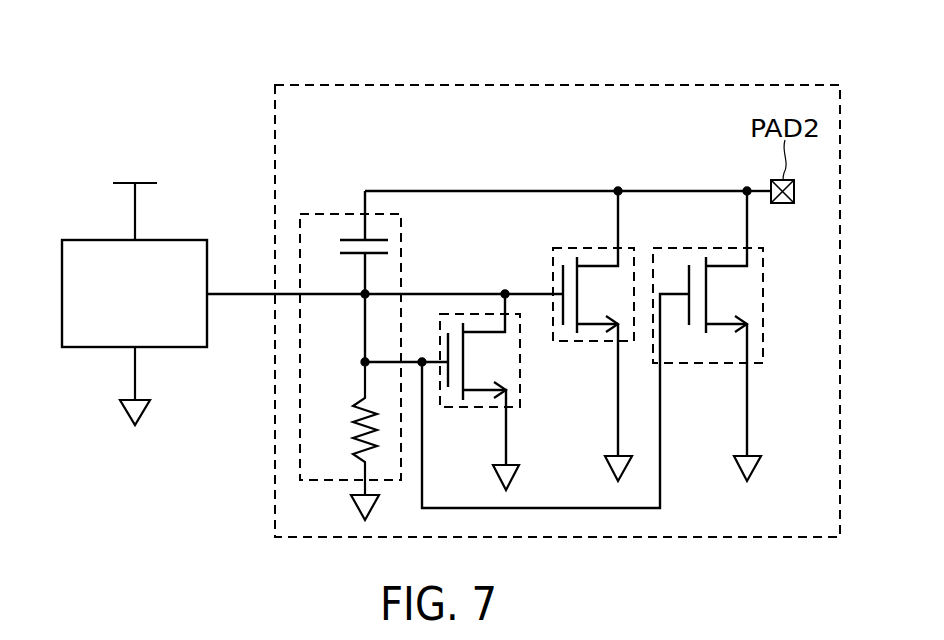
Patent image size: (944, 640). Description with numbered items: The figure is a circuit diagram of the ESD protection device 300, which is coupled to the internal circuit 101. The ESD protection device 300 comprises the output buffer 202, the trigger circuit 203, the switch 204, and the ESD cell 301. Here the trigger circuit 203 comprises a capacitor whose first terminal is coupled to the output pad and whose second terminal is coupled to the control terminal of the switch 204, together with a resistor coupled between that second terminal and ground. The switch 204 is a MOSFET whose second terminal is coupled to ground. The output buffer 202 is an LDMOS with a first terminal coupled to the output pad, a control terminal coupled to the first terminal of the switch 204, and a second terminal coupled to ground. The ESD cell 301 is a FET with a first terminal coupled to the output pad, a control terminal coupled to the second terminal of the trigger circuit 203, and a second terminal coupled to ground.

The internal circuit 101 is at (62, 258).
The ESD protection device 300 is at (576, 85).
The trigger circuit 203 is at (401, 248).
The switch 204 is at (522, 385).
The output buffer 202 is at (596, 343).
The ESD cell 301 is at (764, 340).